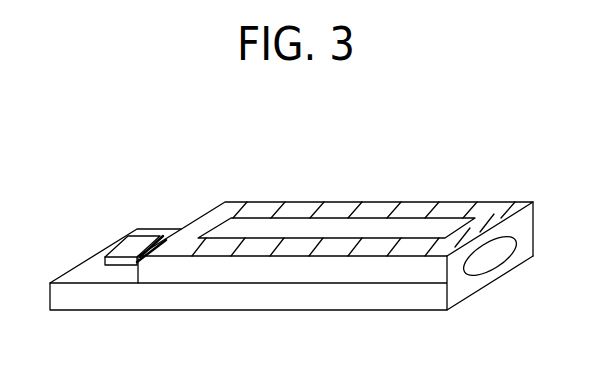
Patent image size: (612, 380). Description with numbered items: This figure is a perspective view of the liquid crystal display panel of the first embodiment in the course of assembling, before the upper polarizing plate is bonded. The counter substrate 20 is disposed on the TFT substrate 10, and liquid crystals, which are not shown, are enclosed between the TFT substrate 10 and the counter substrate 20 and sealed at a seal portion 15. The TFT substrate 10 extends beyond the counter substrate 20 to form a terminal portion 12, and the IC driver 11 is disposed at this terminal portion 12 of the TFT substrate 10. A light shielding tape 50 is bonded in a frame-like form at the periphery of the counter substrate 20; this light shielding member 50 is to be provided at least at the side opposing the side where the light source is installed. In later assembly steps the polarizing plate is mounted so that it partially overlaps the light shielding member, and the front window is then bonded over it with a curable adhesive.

The TFT substrate 10 is at (243, 299).
The IC driver 11 is at (132, 249).
The terminal portion 12 is at (103, 272).
The seal portion 15 is at (498, 257).
The counter substrate 20 is at (350, 270).
The light shielding tape 50 is at (374, 210).